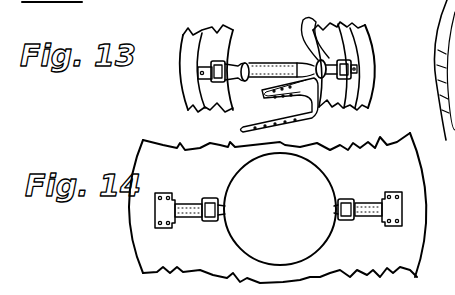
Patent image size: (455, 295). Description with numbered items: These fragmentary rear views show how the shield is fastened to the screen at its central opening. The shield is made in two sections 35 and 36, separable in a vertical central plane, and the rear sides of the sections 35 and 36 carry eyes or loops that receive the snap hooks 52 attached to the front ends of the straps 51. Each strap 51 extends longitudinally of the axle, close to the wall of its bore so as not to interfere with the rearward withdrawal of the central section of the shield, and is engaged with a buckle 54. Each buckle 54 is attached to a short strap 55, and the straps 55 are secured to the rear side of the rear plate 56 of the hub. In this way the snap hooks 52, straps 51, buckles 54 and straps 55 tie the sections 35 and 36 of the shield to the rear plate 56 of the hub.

In FIG. 13, the shield section 35 is at (340, 48).
In FIG. 13, the shield section 36 is at (187, 52).
In FIG. 13, the strap 51 is at (259, 67).
In FIG. 13, the snap hook 52 is at (306, 25).
In FIG. 14, the buckle 54 is at (219, 211).
In FIG. 14, the strap 55 is at (188, 201).
In FIG. 14, the rear plate 56 is at (277, 208).